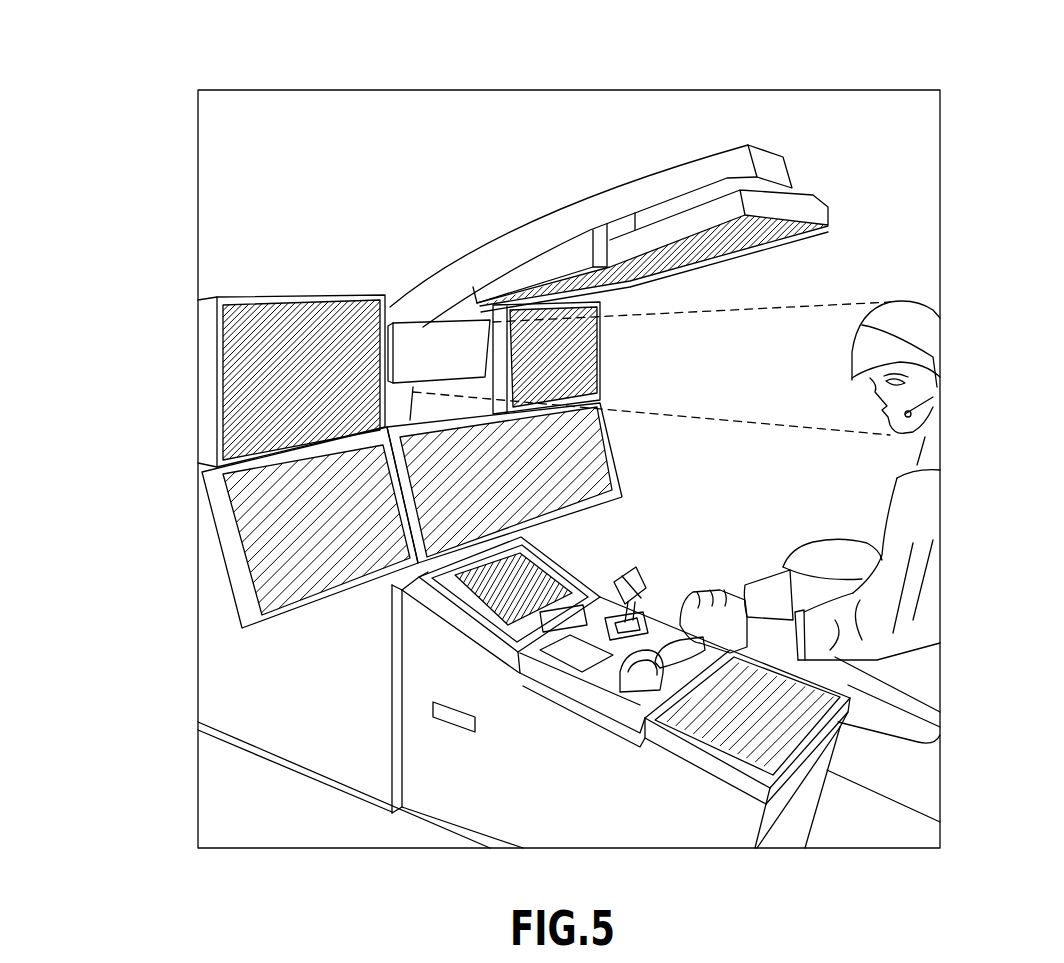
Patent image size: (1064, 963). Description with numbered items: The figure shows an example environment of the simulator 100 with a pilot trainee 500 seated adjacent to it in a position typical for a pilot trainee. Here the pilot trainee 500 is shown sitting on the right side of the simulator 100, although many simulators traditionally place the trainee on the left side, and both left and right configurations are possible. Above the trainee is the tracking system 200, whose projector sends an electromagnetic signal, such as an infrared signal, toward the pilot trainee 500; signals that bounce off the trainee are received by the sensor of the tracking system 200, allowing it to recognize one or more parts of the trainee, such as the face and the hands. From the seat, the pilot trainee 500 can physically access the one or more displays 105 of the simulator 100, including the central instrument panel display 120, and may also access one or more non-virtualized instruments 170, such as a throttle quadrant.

The simulator 100 is at (117, 66).
The displays 105 is at (621, 483).
The central instrument panel display 120 is at (427, 480).
The non-virtualized instruments 170 is at (645, 578).
The tracking system 200 is at (425, 338).
The pilot trainee 500 is at (944, 314).